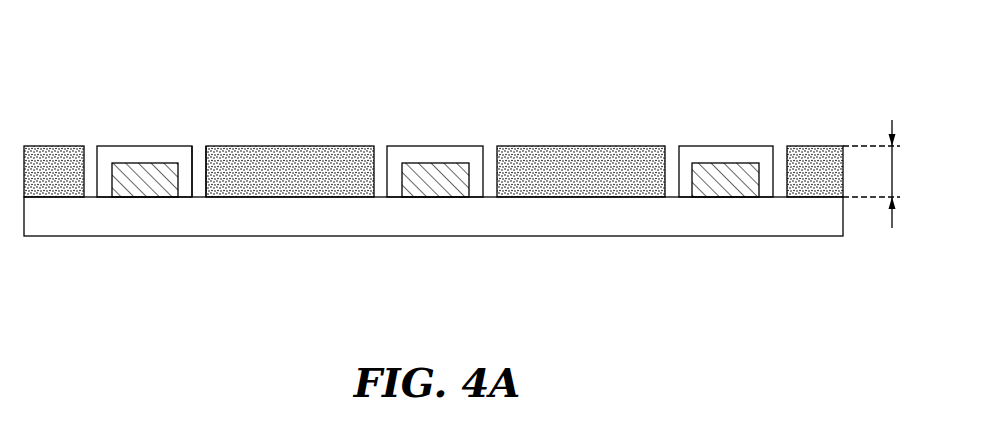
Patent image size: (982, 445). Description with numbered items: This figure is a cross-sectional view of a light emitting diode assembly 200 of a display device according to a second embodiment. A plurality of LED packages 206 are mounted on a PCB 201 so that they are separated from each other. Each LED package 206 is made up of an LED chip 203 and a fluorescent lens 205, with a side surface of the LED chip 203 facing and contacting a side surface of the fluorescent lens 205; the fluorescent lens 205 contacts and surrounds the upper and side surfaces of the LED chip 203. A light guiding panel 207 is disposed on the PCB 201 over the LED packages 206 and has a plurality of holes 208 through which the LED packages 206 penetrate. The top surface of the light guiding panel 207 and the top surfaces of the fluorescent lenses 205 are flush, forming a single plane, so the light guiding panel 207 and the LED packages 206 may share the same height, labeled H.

The light emitting device 200 is at (462, 172).
The PCB 201 is at (107, 213).
The LED chip 203 is at (123, 162).
The fluorescent lens 205 is at (145, 153).
The LED package 206 is at (138, 106).
The light guiding panel 207 is at (286, 168).
The hole 208 is at (200, 145).